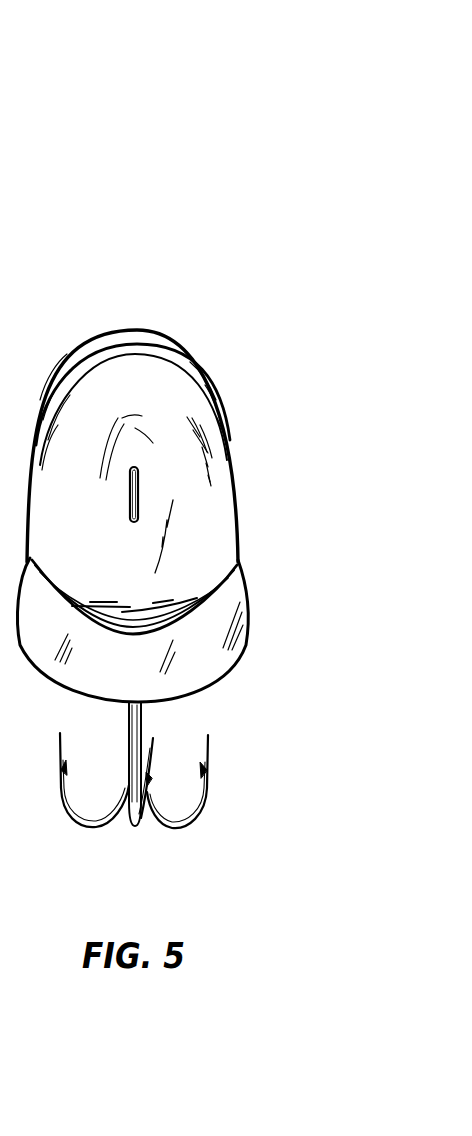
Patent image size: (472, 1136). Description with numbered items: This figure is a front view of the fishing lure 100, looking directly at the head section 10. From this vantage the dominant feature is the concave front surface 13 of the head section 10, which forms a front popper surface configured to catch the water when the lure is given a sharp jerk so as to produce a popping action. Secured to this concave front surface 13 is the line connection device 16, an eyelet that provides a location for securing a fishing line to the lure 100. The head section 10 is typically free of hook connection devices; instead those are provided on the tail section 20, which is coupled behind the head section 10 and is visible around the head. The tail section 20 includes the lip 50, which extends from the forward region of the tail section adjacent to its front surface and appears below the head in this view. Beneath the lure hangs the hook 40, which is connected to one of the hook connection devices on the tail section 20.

The fishing lure 100 is at (301, 200).
The head section 10 is at (70, 378).
The tail section 20 is at (137, 330).
The front surface 13 is at (206, 465).
The line connection device 16 is at (139, 495).
The lip 50 is at (227, 668).
The hook 40 is at (178, 828).